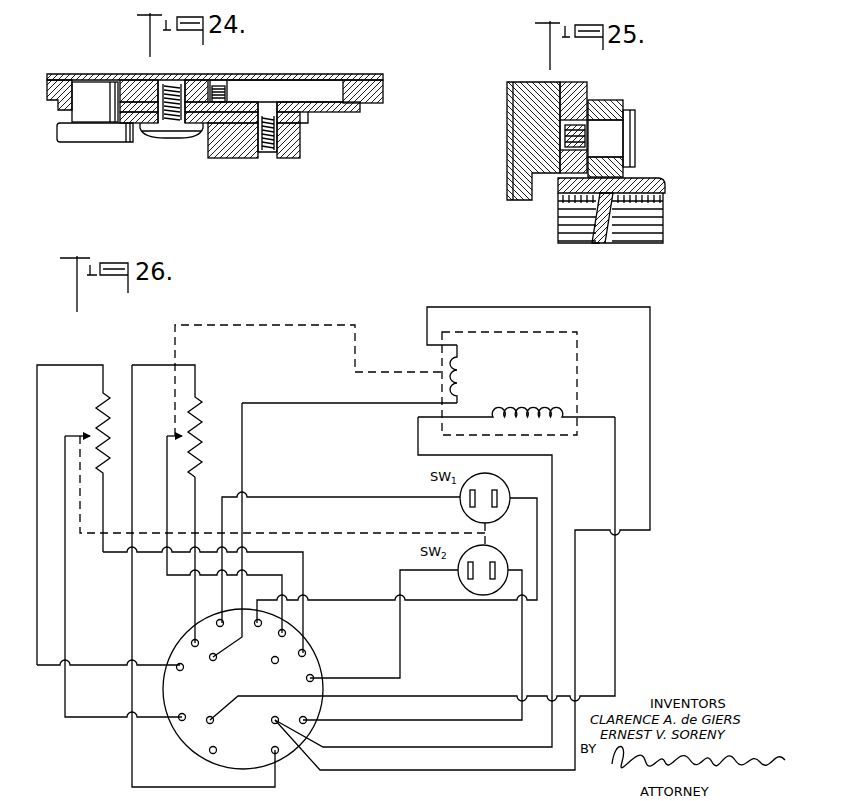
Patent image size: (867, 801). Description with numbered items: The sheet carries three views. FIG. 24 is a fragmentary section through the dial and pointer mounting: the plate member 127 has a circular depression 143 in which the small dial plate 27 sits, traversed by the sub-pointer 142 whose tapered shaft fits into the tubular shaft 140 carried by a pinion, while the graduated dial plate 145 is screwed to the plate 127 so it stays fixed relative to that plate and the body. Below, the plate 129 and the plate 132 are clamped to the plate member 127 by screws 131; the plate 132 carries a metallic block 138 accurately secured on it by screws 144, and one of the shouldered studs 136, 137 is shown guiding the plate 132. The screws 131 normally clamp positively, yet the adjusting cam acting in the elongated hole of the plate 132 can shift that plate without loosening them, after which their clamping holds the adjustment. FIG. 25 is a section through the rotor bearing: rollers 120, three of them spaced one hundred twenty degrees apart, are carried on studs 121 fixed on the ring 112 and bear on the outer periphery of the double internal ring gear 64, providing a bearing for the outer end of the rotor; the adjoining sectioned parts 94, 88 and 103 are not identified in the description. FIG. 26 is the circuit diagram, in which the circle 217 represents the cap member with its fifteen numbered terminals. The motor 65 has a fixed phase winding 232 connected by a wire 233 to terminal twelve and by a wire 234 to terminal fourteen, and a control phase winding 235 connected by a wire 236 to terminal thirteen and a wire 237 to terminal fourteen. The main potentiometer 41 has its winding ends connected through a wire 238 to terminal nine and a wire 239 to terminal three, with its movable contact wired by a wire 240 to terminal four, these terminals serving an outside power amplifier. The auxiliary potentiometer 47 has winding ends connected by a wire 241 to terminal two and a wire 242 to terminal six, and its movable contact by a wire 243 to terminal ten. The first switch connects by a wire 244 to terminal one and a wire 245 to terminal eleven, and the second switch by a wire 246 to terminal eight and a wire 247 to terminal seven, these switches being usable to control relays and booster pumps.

In FIG. 24, the dial plate 27 is at (292, 98).
In FIG. 24, the dial plate 145 is at (367, 78).
In FIG. 25, the dial plate 145 is at (508, 133).
In FIG. 24, the plate member 127 is at (377, 100).
In FIG. 25, the plate member 127 is at (518, 90).
In FIG. 24, the plate 129 is at (360, 112).
In FIG. 24, the circular depression 143 is at (263, 90).
In FIG. 24, the shouldered stud 137 is at (72, 118).
In FIG. 24, the shouldered stud 136 is at (102, 133).
In FIG. 24, the sub-pointer 142 is at (232, 62).
In FIG. 24, the tubular shaft 140 is at (230, 94).
In FIG. 24, the screw 131 is at (165, 128).
In FIG. 24, the metallic block 138 is at (233, 160).
In FIG. 24, the screw 144 is at (272, 153).
In FIG. 24, the plate 132 is at (303, 122).
In FIG. 25, the ring 112 is at (573, 88).
In FIG. 25, the roller 120 is at (607, 102).
In FIG. 25, the stud 121 is at (618, 142).
In FIG. 25, the double internal ring gear 64 is at (683, 164).
In FIG. 25, the gear 94 is at (560, 207).
In FIG. 25, the gear 88 is at (660, 200).
In FIG. 25, the web 103 is at (617, 213).
In FIG. 26, the main potentiometer 41 is at (96, 413).
In FIG. 26, the auxiliary potentiometer 47 is at (197, 405).
In FIG. 26, the wire 241 is at (195, 487).
In FIG. 26, the wire 233 is at (300, 396).
In FIG. 26, the motor 65 is at (586, 372).
In FIG. 26, the fixed phase winding 232 is at (468, 370).
In FIG. 26, the control phase winding 235 is at (540, 397).
In FIG. 26, the wire 234 is at (652, 458).
In FIG. 26, the wire 237 is at (554, 491).
In FIG. 26, the wire 236 is at (616, 586).
In FIG. 26, the wire 244 is at (323, 479).
In FIG. 26, the wire 245 is at (458, 603).
In FIG. 26, the wire 238 is at (306, 580).
In FIG. 26, the wire 243 is at (251, 576).
In FIG. 26, the wire 246 is at (404, 644).
In FIG. 26, the wire 247 is at (518, 653).
In FIG. 26, the cap member 217 is at (322, 650).
In FIG. 26, the wire 240 is at (65, 635).
In FIG. 26, the wire 242 is at (133, 635).
In FIG. 26, the wire 239 is at (47, 668).